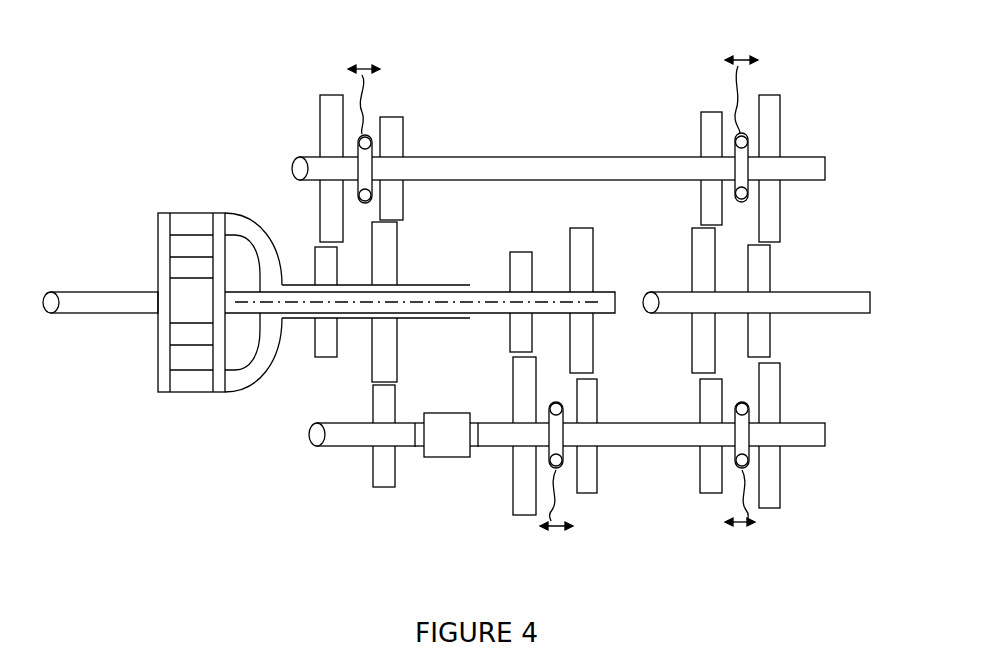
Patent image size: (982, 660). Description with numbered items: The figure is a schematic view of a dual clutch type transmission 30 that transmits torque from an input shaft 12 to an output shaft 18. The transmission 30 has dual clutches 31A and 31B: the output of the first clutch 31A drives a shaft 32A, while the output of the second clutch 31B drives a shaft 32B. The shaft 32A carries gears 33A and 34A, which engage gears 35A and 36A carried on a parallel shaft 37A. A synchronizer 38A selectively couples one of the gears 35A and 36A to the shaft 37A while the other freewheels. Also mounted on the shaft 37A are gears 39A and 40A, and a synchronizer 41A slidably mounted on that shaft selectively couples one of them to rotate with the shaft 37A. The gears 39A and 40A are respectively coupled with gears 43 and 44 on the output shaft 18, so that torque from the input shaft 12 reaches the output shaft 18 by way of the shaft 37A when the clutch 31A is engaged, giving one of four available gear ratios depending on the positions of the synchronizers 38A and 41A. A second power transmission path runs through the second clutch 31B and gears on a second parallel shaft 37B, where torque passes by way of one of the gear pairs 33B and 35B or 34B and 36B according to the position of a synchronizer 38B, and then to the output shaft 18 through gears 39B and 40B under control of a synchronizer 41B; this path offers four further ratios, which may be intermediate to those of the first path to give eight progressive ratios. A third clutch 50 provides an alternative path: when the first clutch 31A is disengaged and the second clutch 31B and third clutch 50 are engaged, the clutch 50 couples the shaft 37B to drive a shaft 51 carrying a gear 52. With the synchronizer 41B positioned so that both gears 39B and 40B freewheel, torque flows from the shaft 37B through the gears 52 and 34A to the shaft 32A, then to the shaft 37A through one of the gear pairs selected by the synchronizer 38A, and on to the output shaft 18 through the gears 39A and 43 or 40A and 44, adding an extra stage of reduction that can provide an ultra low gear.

The input shaft 12 is at (60, 292).
The output shaft 18 is at (837, 313).
The transmission 30 is at (137, 150).
The first clutch 31A is at (187, 213).
The second clutch 31B is at (193, 347).
The shaft 32A is at (275, 248).
The shaft 32B is at (492, 292).
The gear 33A is at (330, 358).
The gear 33B is at (532, 252).
The gear 34A is at (397, 356).
The gear 34B is at (593, 322).
The gear 35A is at (320, 95).
The gear 35B is at (515, 513).
The gear 36A is at (402, 117).
The gear 36B is at (577, 493).
The parallel shaft 37A is at (453, 157).
The second parallel shaft 37B is at (620, 447).
The synchronizer 38A is at (368, 135).
The synchronizer 38B is at (558, 468).
The gear 39A is at (700, 113).
The gear 39B is at (700, 387).
The gear 40A is at (781, 112).
The gear 40B is at (773, 508).
The synchronizer 41A is at (745, 133).
The synchronizer 41B is at (742, 468).
The gear 43 is at (692, 255).
The gear 44 is at (771, 258).
The third clutch 50 is at (446, 458).
The shaft 51 is at (323, 447).
The gear 52 is at (373, 468).